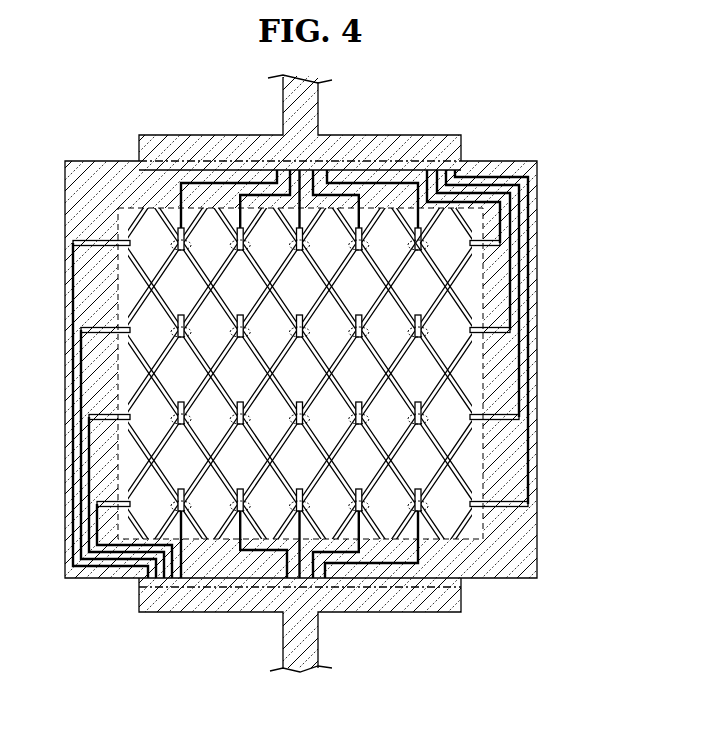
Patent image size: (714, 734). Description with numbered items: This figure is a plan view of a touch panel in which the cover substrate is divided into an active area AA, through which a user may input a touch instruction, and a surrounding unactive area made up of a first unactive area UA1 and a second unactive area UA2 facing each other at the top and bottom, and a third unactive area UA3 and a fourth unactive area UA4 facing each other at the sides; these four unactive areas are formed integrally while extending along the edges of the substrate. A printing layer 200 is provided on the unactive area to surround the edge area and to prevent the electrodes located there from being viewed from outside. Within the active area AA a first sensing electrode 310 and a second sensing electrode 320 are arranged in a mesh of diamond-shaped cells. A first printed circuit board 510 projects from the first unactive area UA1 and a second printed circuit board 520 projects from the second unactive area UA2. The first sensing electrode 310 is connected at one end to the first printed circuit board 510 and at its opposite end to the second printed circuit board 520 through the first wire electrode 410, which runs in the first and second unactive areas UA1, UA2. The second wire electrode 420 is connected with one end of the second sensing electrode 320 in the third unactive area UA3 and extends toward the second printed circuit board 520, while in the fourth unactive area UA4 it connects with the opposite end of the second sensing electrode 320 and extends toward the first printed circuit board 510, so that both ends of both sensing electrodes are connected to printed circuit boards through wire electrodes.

The printing layer 200 is at (122, 172).
The first printed circuit board 510 is at (430, 148).
The second printed circuit board 520 is at (358, 612).
The first wire electrode 410 is at (360, 182).
The second wire electrode 420 is at (532, 347).
The first sensing electrode 310 is at (430, 286).
The second sensing electrode 320 is at (455, 233).
The first unactive area UA1 is at (233, 172).
The second unactive area UA2 is at (407, 587).
The third unactive area UA3 is at (87, 416).
The fourth unactive area UA4 is at (502, 379).
The active area AA is at (488, 528).